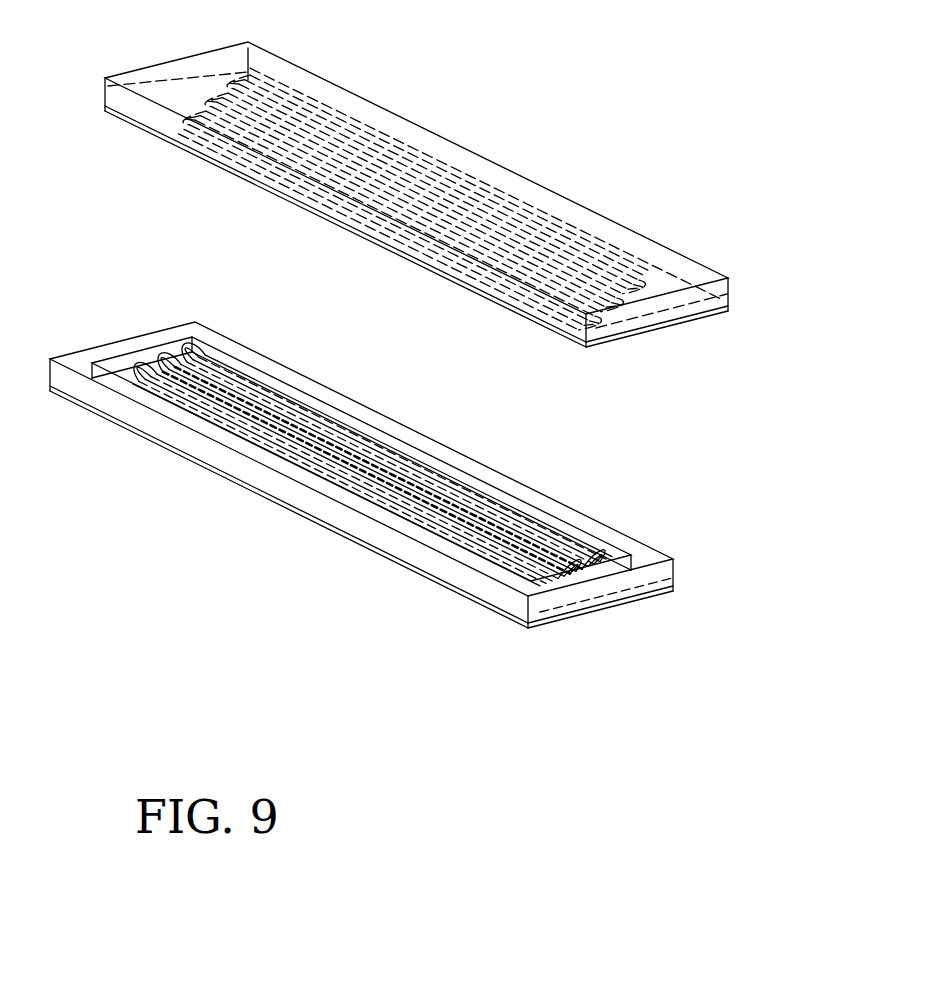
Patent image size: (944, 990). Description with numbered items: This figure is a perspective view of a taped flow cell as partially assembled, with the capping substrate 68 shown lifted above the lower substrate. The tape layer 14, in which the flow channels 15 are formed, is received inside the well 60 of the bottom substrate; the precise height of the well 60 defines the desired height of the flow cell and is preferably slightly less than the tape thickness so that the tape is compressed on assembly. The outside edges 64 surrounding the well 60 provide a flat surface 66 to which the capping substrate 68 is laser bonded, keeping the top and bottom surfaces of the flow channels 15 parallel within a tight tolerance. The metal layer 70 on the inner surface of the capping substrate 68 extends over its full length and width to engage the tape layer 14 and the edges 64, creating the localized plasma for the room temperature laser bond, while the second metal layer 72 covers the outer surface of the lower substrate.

The tape layer 14 is at (612, 553).
The flow channels 15 is at (435, 468).
The well 60 is at (675, 573).
The outside edges 64 is at (85, 360).
The flat surface 66 is at (142, 343).
The capping substrate 68 is at (612, 280).
The metal layer 70 is at (690, 340).
The second metal layer 72 is at (620, 602).